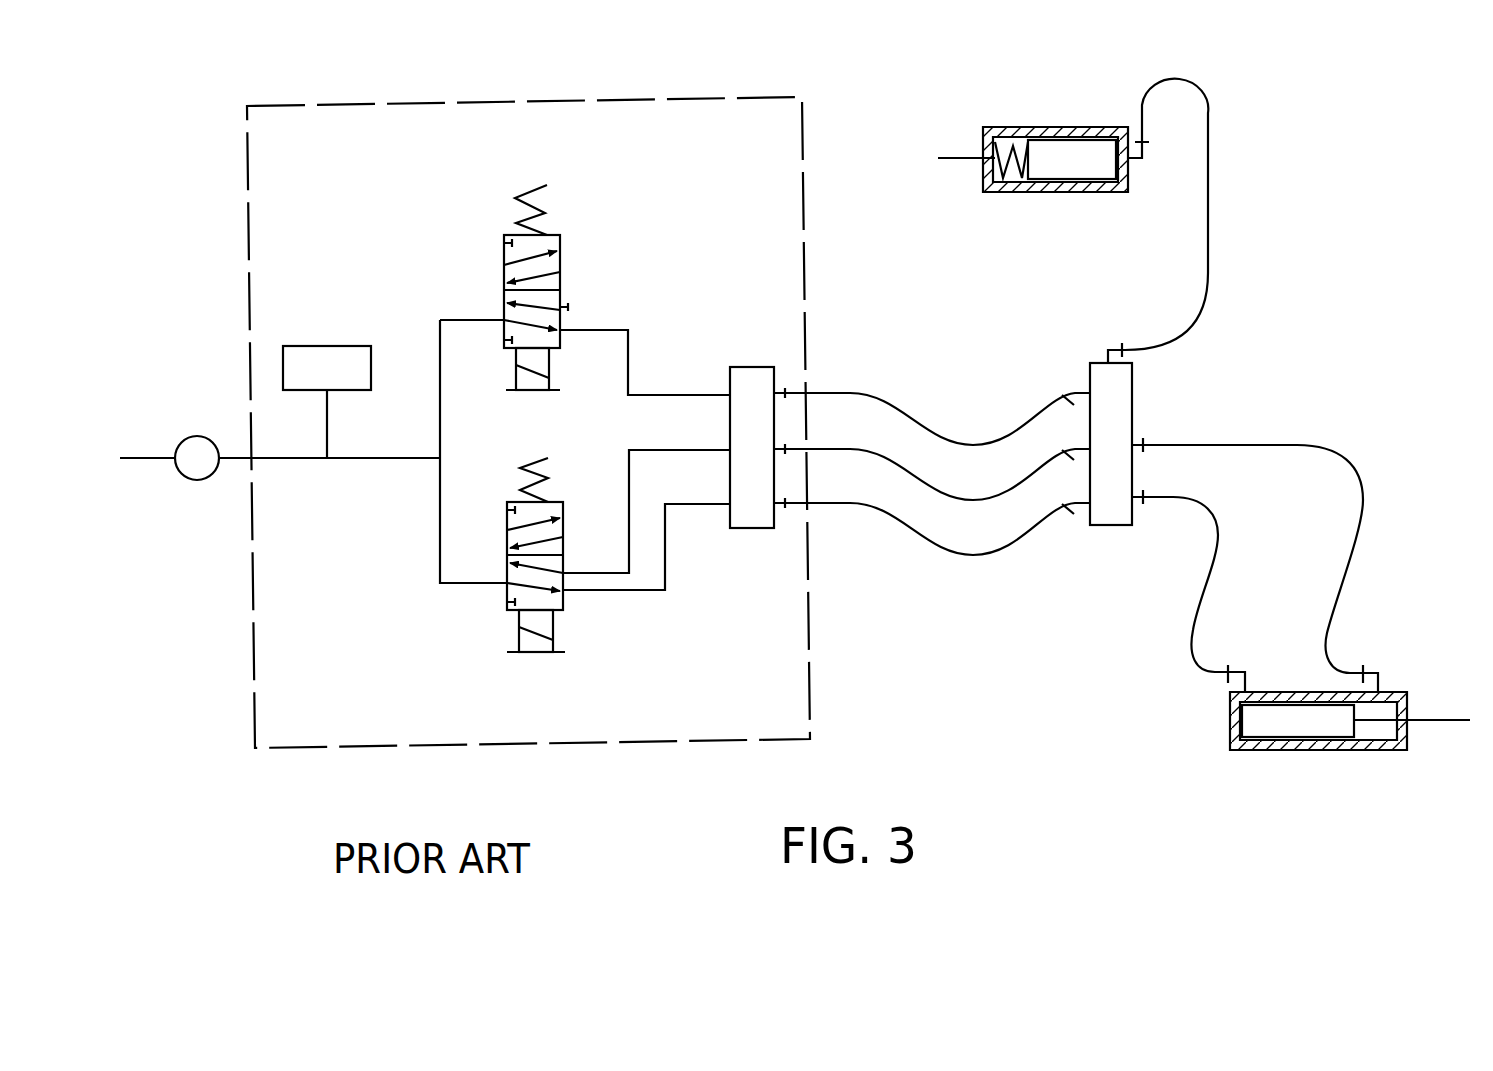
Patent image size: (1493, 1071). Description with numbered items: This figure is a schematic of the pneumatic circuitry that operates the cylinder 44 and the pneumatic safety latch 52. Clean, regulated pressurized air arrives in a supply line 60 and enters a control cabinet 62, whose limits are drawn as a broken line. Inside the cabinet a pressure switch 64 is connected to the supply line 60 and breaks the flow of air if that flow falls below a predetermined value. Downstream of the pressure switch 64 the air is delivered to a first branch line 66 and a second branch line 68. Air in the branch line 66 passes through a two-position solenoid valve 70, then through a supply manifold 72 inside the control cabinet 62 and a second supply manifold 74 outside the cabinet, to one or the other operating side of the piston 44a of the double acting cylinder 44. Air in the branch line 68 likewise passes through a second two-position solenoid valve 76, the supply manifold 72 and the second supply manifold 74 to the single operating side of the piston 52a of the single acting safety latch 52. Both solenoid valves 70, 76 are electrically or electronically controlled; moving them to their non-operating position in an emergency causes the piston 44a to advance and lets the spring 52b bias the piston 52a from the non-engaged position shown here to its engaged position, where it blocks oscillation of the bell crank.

The control cabinet 62 is at (350, 105).
The supply line 60 is at (150, 458).
The pressure switch 64 is at (371, 366).
The second branch line 68 is at (472, 320).
The solenoid valve 76 is at (560, 263).
The solenoid valve 70 is at (507, 565).
The first branch line 66 is at (478, 588).
The supply manifold 72 is at (755, 528).
The second supply manifold 74 is at (1135, 480).
The pneumatic safety latch 52 is at (1040, 127).
The piston 52a is at (1030, 172).
The spring 52b is at (1010, 140).
The cylinder 44 is at (1325, 752).
The piston 44a is at (1370, 752).